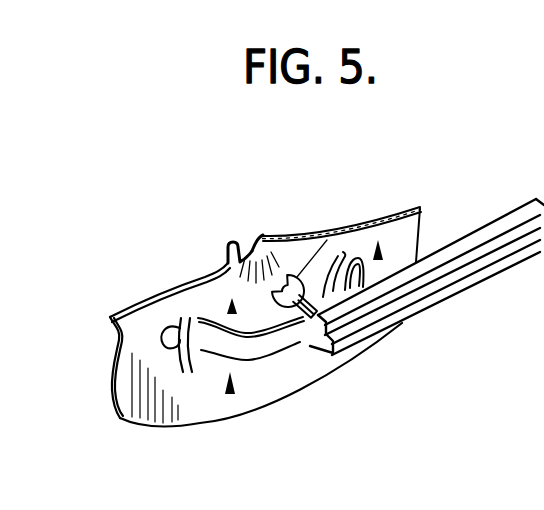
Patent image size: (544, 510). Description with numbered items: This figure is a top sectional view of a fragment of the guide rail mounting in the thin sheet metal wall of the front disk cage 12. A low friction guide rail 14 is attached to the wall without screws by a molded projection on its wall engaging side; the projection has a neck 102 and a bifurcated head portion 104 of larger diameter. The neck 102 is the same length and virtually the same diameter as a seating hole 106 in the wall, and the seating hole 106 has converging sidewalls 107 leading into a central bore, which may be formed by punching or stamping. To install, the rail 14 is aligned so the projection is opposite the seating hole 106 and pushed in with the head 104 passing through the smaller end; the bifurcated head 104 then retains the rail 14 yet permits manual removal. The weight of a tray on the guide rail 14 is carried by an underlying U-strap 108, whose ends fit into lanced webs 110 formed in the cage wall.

The front disk cage 12 is at (137, 303).
The guide rail 14 is at (500, 216).
The neck 102 is at (303, 322).
The bifurcated head portion 104 is at (353, 218).
The seating hole 106 is at (268, 234).
The converging sidewalls 107 is at (250, 249).
The U-strap 108 is at (275, 350).
The lanced webs 110 is at (197, 373).